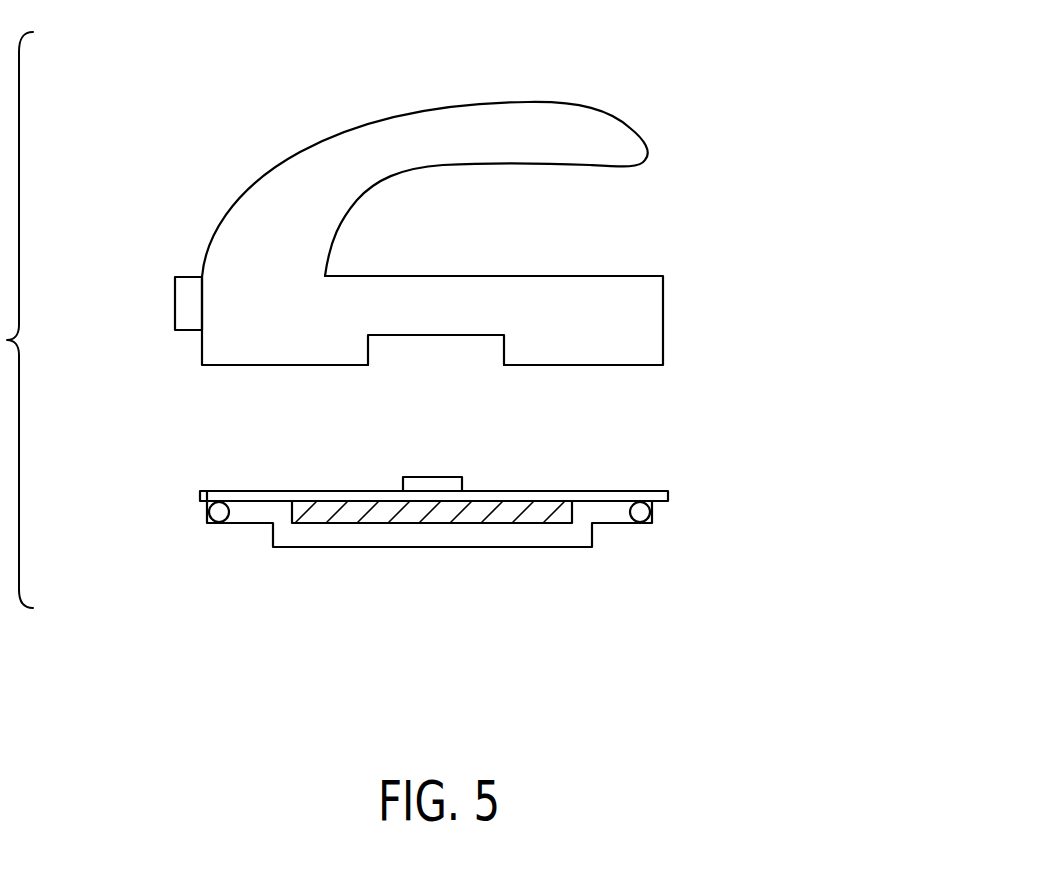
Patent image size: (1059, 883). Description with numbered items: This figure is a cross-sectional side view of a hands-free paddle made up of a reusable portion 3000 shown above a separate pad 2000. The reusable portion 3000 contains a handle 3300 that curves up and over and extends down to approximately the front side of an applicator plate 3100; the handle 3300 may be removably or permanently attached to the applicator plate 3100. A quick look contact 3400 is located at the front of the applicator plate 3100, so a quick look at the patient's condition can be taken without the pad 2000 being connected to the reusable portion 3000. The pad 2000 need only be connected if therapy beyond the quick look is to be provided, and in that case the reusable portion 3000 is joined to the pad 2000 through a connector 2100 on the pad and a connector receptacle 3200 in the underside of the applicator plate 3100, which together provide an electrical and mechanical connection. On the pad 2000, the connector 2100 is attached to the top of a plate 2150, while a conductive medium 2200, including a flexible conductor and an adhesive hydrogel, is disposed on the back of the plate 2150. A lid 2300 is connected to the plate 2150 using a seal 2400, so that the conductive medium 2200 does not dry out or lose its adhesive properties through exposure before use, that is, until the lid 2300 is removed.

The reusable portion 3000 is at (712, 90).
The applicator plate 3100 is at (663, 320).
The connector receptacle 3200 is at (393, 335).
The handle 3300 is at (528, 102).
The quick look contact 3400 is at (175, 307).
The pad 2000 is at (810, 527).
The connector 2100 is at (403, 485).
The plate 2150 is at (205, 503).
The conductive medium 2200 is at (317, 523).
The lid 2300 is at (592, 537).
The seal 2400 is at (652, 510).